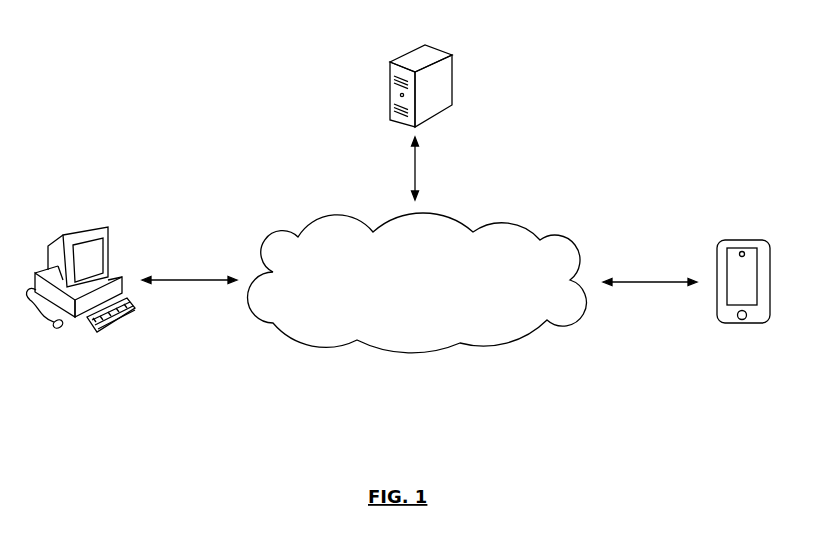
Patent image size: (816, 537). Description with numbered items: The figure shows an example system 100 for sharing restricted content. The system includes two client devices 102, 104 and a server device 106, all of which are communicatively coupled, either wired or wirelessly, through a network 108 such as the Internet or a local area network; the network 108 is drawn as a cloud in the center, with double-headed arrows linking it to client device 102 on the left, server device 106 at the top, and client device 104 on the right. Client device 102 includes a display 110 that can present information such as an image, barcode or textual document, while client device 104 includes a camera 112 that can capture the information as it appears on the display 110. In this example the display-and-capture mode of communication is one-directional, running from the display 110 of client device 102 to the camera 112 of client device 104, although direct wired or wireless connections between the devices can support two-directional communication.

The system 100 is at (607, 84).
The client device 102 is at (81, 255).
The client device 104 is at (755, 261).
The server device 106 is at (450, 73).
The network 108 is at (417, 283).
The display 110 is at (88, 260).
The camera 112 is at (746, 254).